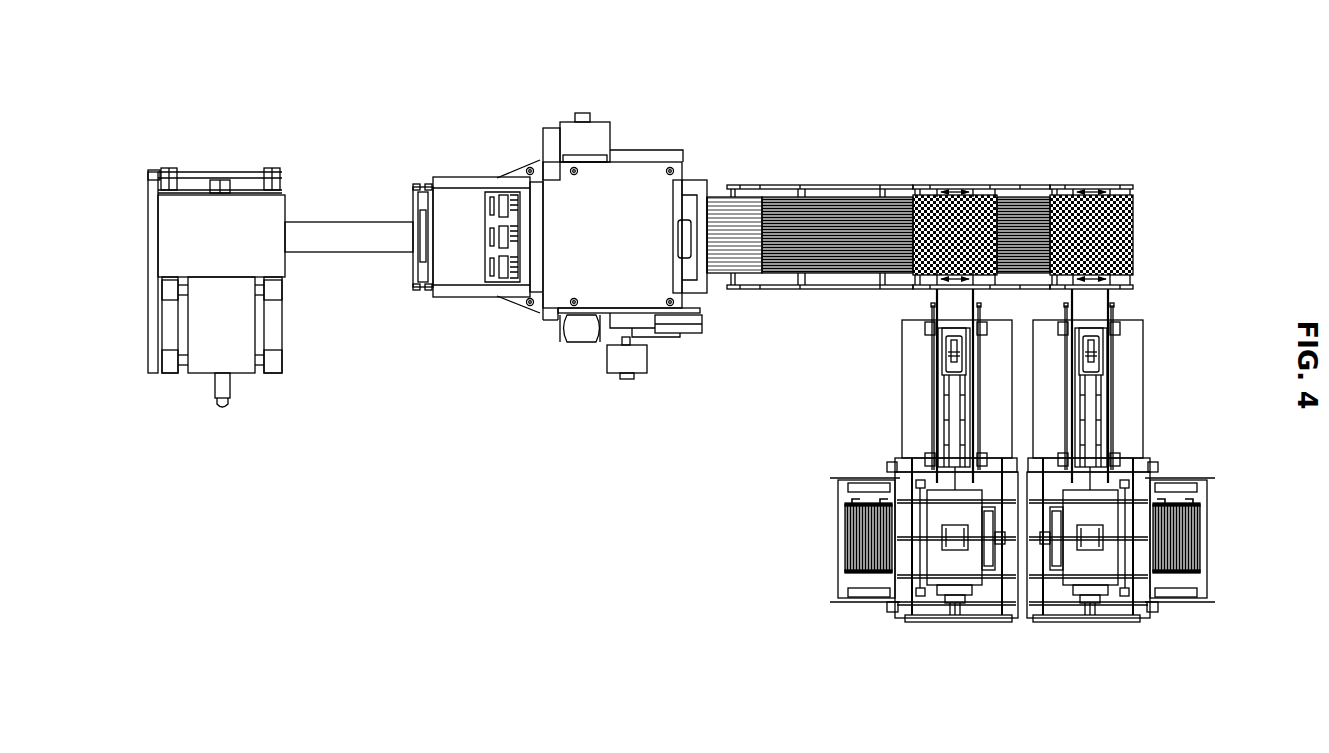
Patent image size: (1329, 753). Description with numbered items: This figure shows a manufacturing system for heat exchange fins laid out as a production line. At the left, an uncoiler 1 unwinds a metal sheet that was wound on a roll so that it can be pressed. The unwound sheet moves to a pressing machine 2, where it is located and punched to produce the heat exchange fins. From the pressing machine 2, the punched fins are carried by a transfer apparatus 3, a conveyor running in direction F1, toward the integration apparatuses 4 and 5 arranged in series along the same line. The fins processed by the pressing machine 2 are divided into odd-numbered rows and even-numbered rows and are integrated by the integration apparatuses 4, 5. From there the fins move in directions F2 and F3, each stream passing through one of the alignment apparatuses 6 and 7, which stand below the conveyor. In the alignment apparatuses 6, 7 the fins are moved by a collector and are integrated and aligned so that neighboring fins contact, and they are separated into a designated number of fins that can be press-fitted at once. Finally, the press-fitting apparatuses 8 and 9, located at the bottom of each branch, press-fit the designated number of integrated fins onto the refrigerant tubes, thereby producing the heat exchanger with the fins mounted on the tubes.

The uncoiler 1 is at (221, 164).
The pressing machine 2 is at (542, 113).
The transfer apparatus 3 is at (821, 176).
The integration apparatus 4 is at (958, 176).
The integration apparatus 5 is at (1098, 176).
The alignment apparatus 6 is at (886, 409).
The alignment apparatus 7 is at (1158, 409).
The press-fitting apparatus 8 is at (891, 628).
The press-fitting apparatus 9 is at (1154, 628).